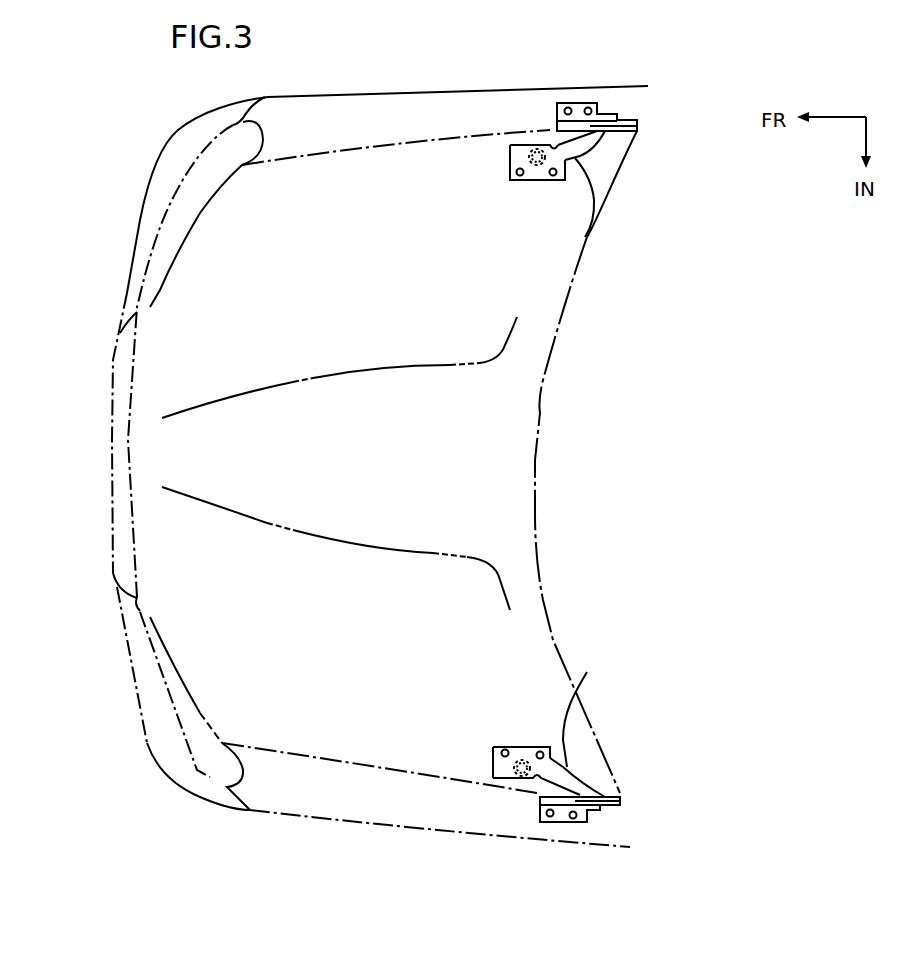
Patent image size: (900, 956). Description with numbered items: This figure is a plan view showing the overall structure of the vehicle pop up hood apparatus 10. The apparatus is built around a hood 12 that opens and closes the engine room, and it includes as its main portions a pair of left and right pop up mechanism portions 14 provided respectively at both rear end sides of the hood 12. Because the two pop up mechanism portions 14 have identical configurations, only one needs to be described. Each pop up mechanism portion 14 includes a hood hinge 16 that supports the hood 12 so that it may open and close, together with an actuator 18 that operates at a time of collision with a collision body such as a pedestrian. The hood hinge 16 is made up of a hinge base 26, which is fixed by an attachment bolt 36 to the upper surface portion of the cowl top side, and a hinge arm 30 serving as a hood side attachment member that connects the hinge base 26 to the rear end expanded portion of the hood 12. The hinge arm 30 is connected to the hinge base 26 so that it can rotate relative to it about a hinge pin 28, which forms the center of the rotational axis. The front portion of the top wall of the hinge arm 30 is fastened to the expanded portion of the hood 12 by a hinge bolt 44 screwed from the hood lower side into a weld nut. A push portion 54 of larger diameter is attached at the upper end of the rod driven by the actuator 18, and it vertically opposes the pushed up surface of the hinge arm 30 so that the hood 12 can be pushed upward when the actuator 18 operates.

The vehicle pop up hood apparatus 10 is at (716, 659).
The hood 12 is at (537, 483).
The pop up mechanism portion 14 is at (657, 225).
The hood hinge 16 is at (600, 167).
The actuator 18 is at (528, 150).
The hinge base 26 is at (610, 103).
The hinge pin 28 is at (625, 121).
The hinge arm 30 is at (587, 237).
The attachment bolt 36 is at (588, 108).
The hinge bolt 44 is at (553, 180).
The push portion 54 is at (535, 150).